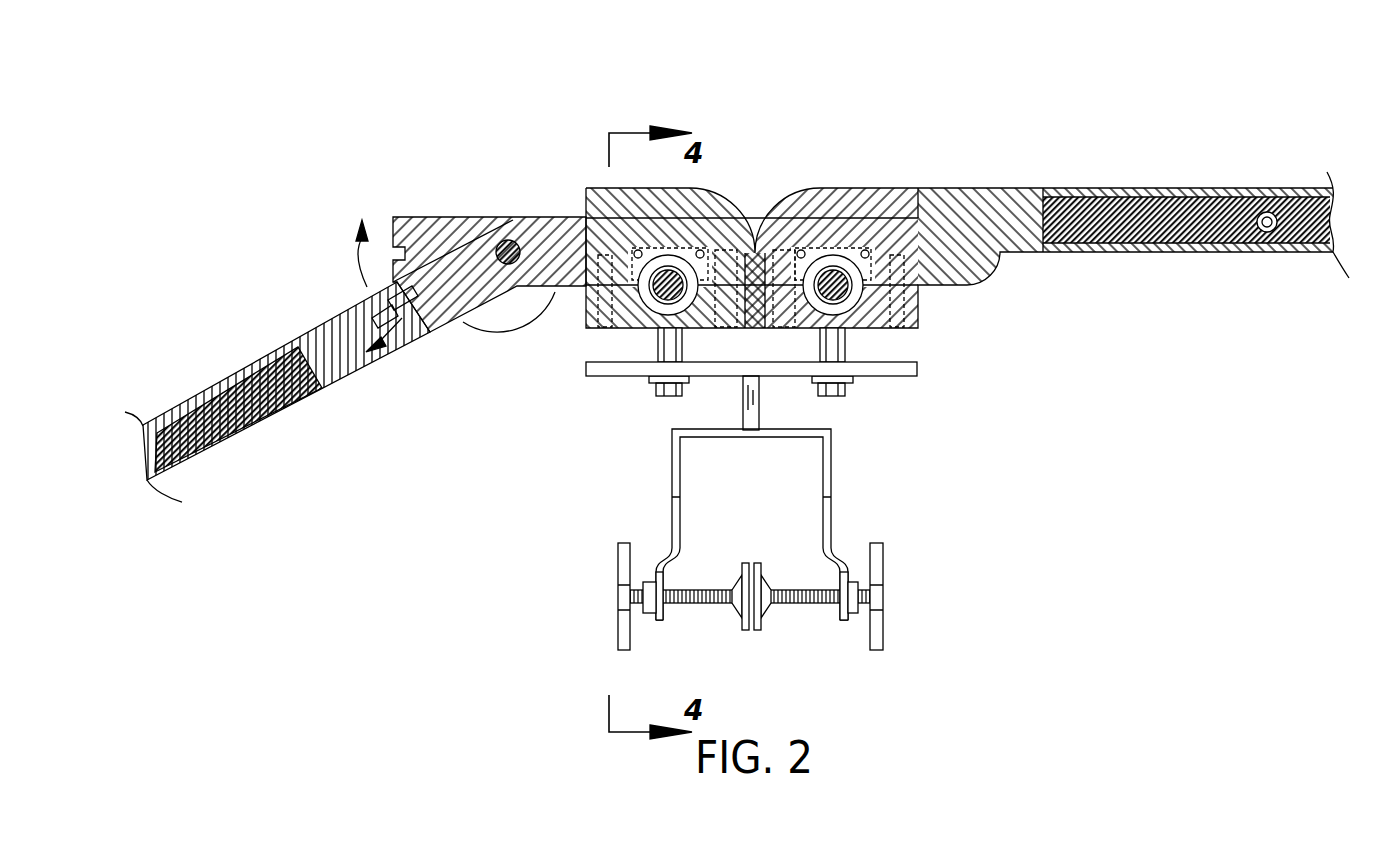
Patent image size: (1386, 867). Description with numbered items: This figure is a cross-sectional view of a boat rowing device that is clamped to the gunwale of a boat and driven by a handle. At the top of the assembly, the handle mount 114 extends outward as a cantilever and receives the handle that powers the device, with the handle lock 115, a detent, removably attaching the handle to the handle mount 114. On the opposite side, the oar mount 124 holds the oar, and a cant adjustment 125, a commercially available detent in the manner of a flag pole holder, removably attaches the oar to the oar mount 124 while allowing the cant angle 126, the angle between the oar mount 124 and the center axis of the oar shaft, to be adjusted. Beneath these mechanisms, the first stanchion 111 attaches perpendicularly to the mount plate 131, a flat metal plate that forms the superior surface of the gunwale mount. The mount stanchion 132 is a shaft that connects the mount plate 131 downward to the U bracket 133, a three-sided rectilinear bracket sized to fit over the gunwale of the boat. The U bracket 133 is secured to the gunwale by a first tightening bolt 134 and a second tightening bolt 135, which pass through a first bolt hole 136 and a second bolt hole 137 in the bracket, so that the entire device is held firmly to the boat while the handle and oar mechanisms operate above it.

The first stanchion 111 is at (845, 347).
The handle mount 114 is at (960, 188).
The handle lock 115 is at (1267, 188).
The oar mount 124 is at (570, 217).
The cant adjustment 125 is at (505, 217).
The cant angle 126 is at (517, 332).
The mount plate 131 is at (918, 366).
The mount stanchion 132 is at (757, 406).
The U bracket 133 is at (831, 475).
The first tightening bolt 134 is at (883, 572).
The second tightening bolt 135 is at (618, 566).
The first bolt hole 136 is at (851, 605).
The second bolt hole 137 is at (660, 597).